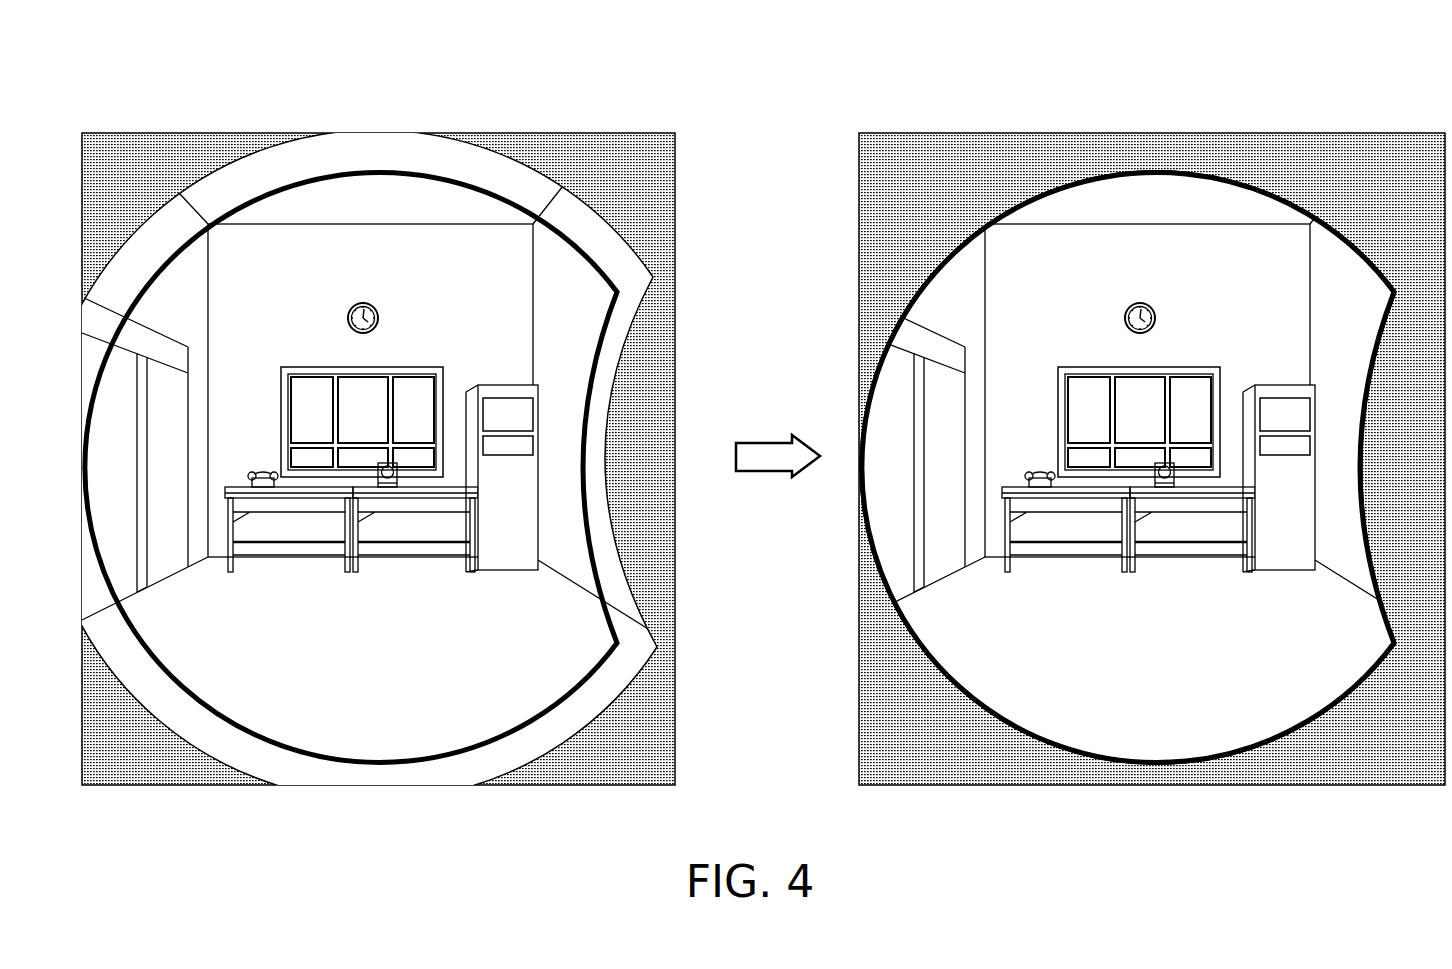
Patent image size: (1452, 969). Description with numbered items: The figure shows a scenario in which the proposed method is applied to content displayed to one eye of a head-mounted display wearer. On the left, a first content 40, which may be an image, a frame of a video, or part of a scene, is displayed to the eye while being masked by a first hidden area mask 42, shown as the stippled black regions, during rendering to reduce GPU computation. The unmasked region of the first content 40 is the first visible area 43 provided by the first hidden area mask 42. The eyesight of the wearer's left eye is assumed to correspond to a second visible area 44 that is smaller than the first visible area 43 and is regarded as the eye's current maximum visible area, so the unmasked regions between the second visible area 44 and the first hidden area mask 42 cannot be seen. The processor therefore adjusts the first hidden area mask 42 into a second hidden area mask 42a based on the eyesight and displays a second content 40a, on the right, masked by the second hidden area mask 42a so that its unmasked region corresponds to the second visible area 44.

The first content 40 is at (553, 273).
The second content 40a is at (1330, 273).
The first hidden area mask 42 is at (134, 161).
The second hidden area mask 42a is at (912, 160).
The first visible area 43 is at (173, 232).
The second visible area 44 is at (493, 188).